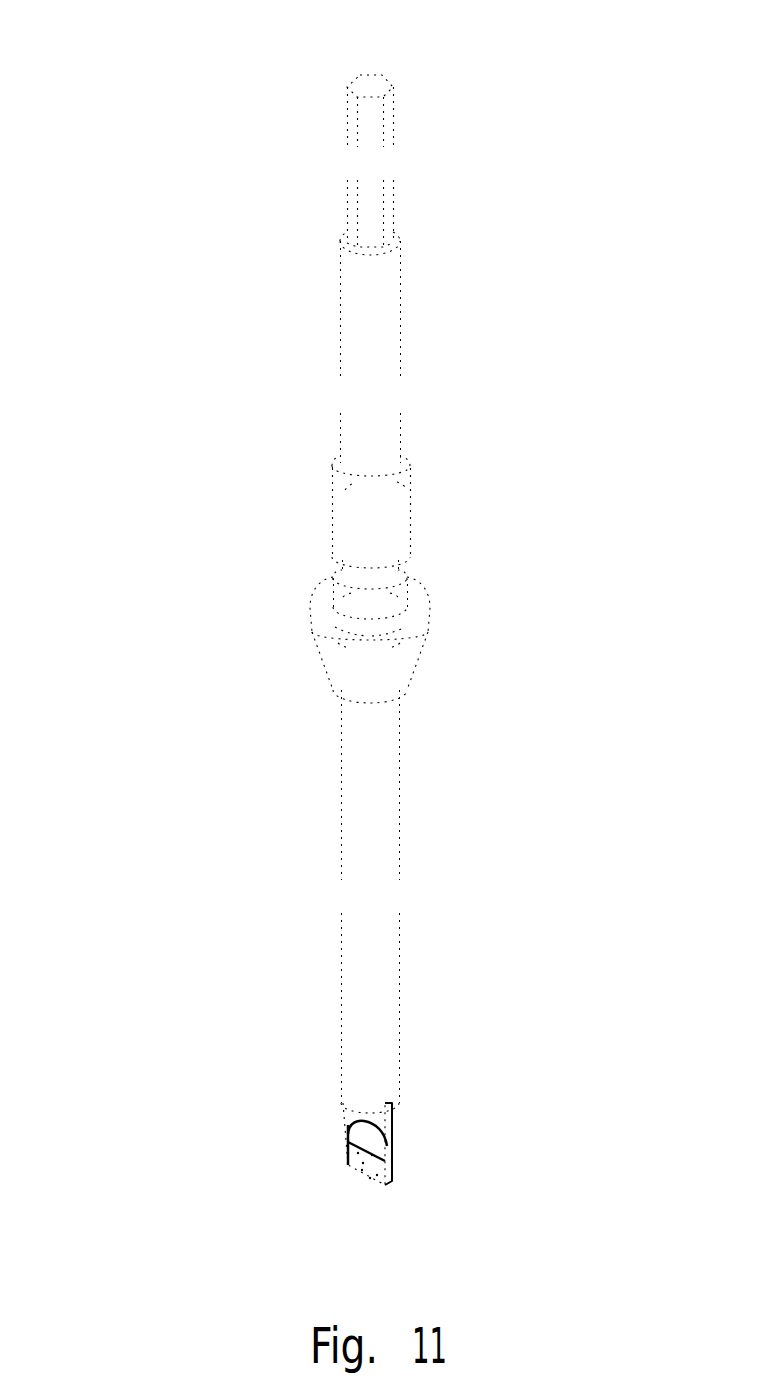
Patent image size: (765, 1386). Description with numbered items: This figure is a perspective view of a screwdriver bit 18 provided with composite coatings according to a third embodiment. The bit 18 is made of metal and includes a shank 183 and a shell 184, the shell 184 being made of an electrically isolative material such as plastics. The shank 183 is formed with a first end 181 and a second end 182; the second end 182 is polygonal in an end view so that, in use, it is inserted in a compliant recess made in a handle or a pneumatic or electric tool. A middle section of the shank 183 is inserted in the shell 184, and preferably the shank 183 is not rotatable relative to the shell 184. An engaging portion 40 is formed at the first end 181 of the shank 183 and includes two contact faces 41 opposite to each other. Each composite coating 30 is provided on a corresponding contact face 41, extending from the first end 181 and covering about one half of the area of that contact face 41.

The bit 18 is at (290, 762).
The second end 182 is at (372, 87).
The shell 184 is at (342, 468).
The shank 183 is at (387, 1130).
The first end 181 is at (389, 1186).
The engaging portion 40 is at (313, 1120).
The contact face 41 is at (368, 1138).
The composite coating 30 is at (362, 1162).